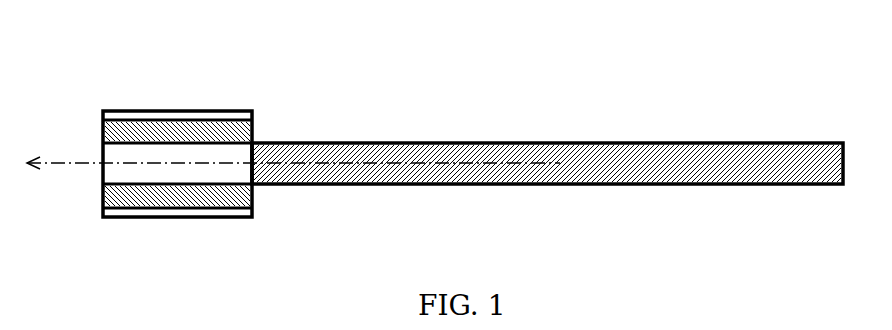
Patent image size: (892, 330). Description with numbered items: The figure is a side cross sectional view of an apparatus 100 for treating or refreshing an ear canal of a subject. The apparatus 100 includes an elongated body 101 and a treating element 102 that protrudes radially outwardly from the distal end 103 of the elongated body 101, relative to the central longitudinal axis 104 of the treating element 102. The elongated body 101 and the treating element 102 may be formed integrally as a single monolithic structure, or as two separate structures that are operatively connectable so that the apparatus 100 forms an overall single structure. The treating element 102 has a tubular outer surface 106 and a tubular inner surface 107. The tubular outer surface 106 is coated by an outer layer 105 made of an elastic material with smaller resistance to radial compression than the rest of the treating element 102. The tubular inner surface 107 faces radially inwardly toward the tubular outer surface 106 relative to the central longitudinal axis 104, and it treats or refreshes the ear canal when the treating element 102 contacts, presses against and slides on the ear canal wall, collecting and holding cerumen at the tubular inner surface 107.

The apparatus 100 is at (435, 162).
The elongated body 101 is at (660, 185).
The treating element 102 is at (199, 174).
The distal end 103 is at (261, 189).
The central longitudinal axis 104 is at (63, 163).
The outer layer 105 is at (122, 218).
The tubular outer surface 106 is at (203, 208).
The tubular inner surface 107 is at (173, 183).